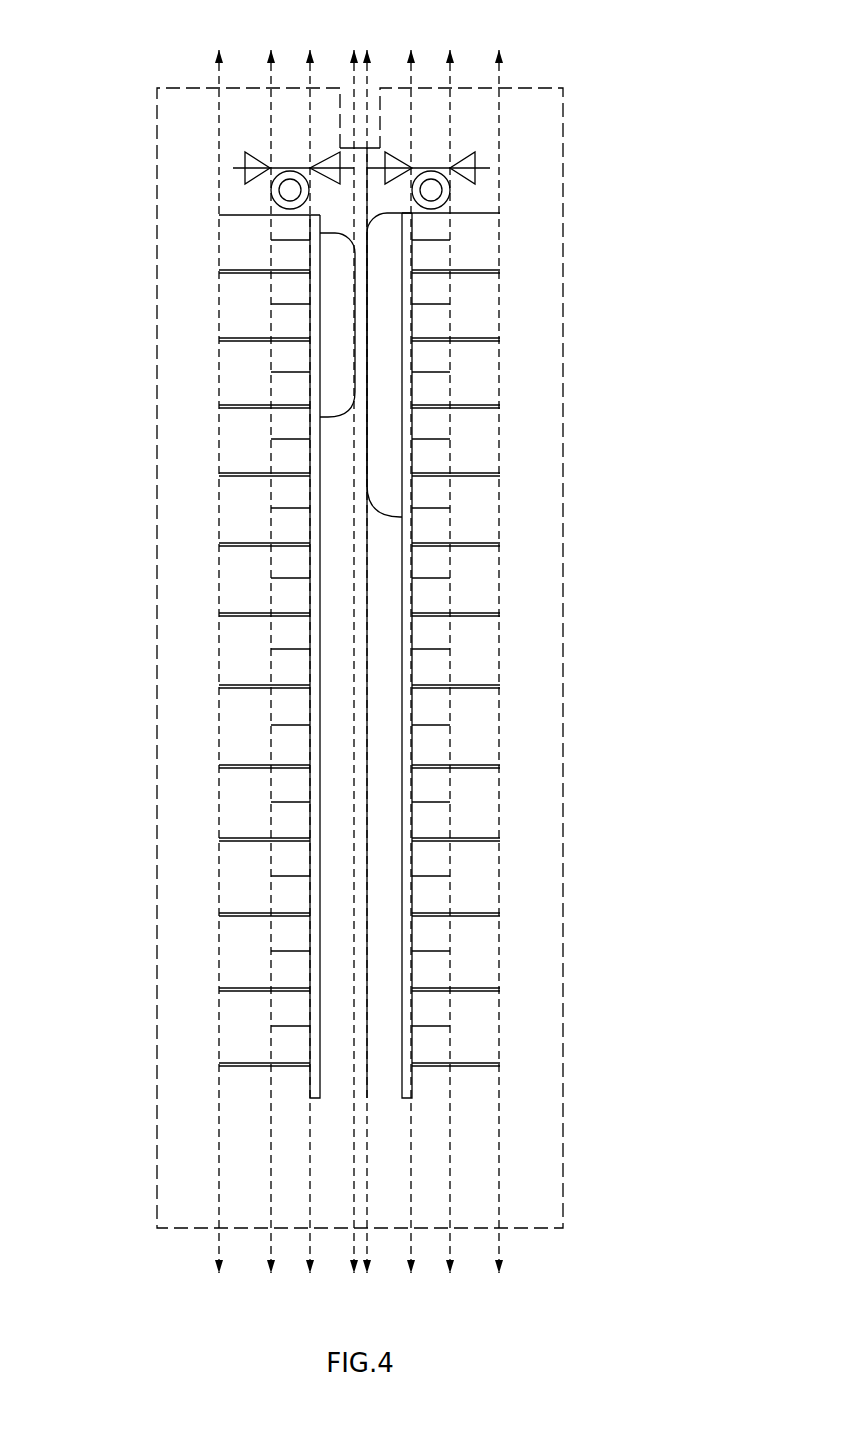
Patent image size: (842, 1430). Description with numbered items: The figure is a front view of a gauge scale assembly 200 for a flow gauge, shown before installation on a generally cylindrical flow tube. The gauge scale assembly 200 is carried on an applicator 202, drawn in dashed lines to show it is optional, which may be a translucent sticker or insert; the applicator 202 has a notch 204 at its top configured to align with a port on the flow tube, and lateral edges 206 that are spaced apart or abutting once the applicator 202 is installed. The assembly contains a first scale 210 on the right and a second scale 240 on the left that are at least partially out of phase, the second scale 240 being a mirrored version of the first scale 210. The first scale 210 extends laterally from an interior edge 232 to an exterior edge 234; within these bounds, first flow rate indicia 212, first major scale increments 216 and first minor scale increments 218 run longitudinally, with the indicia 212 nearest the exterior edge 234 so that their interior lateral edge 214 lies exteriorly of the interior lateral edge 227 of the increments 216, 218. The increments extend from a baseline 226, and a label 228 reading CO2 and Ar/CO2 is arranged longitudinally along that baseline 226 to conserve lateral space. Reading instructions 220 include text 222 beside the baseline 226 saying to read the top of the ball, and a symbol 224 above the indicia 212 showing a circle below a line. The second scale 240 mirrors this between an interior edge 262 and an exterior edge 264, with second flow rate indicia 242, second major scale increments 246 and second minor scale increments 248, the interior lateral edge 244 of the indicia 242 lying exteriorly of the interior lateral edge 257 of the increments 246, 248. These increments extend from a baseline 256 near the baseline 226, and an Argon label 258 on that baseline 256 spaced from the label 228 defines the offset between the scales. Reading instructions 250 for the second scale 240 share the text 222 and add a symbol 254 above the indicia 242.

The gauge scale assembly 200 is at (590, 80).
The applicator 202 is at (185, 1190).
The notch 204 is at (376, 96).
The lateral edges 206 is at (156, 952).
The first scale 210 is at (556, 317).
The first flow rate indicia 212 is at (500, 746).
The interior lateral edge of the first flow rate indicia 214 is at (450, 680).
The first major scale increments 216 is at (481, 471).
The first minor scale increments 218 is at (448, 581).
The reading instructions 220 is at (521, 171).
The text 222 is at (393, 853).
The symbol 224 is at (491, 167).
The baseline 226 is at (416, 1088).
The interior lateral edge of the increments 227 is at (411, 680).
The label 228 is at (407, 311).
The interior edge 232 is at (367, 680).
The exterior edge 234 is at (499, 680).
The second scale 240 is at (165, 368).
The second flow rate indicia 242 is at (222, 743).
The interior lateral edge of the second flow rate indicia 244 is at (271, 645).
The second major scale increments 246 is at (243, 477).
The second minor scale increments 248 is at (270, 581).
The reading instructions 250 is at (213, 174).
The symbol 254 is at (233, 167).
The baseline 256 is at (306, 1088).
The interior lateral edge of the second increments 257 is at (310, 645).
The label 258 is at (304, 290).
The interior edge 262 is at (354, 645).
The exterior edge 264 is at (219, 645).